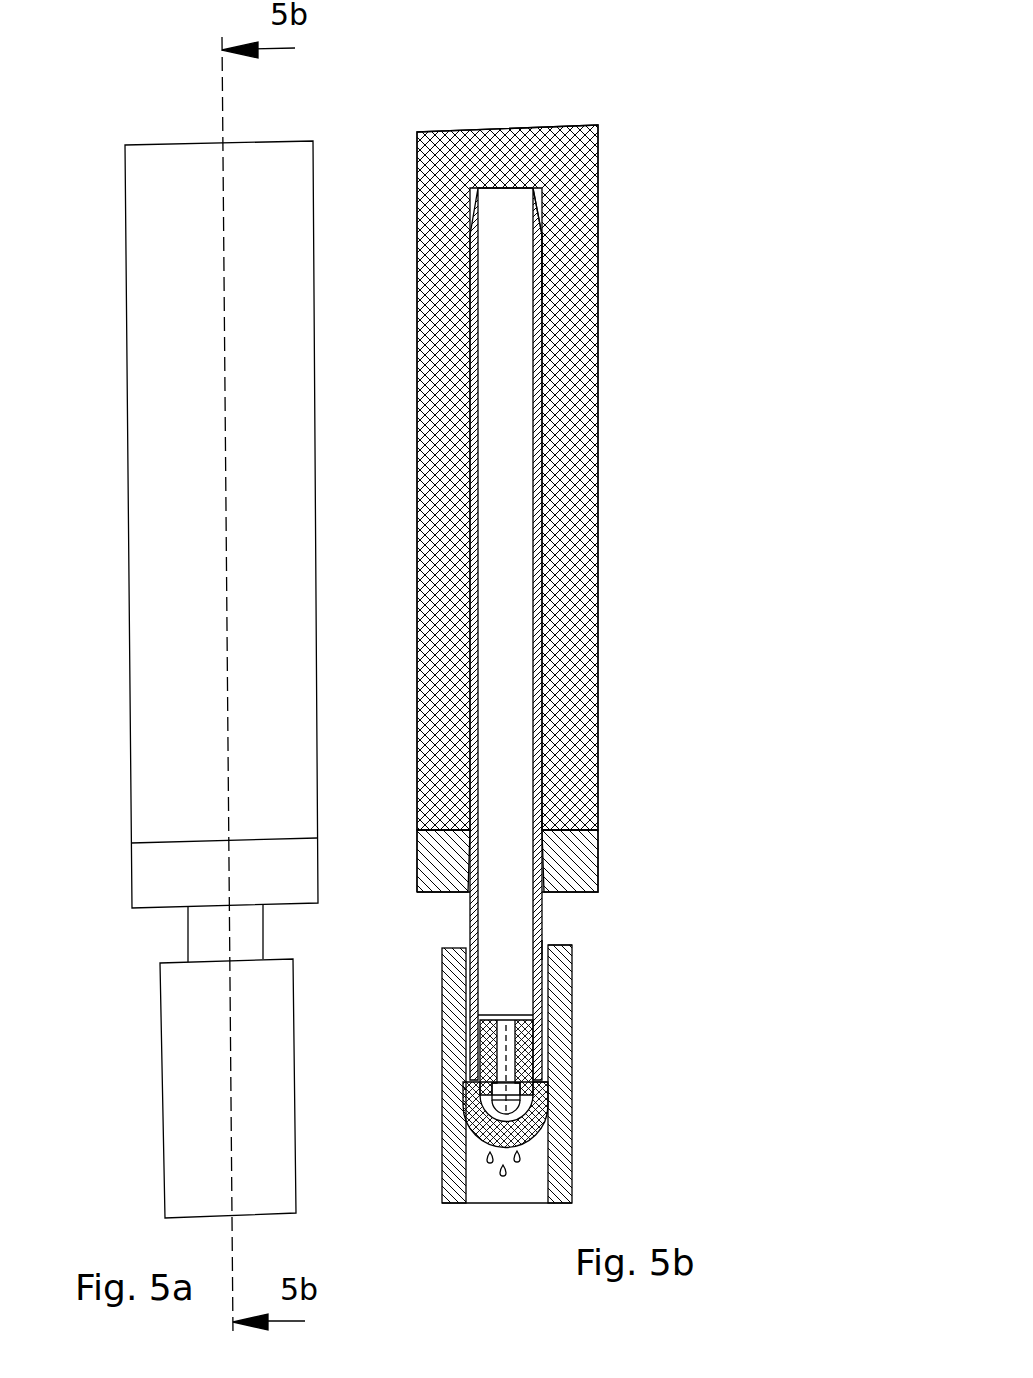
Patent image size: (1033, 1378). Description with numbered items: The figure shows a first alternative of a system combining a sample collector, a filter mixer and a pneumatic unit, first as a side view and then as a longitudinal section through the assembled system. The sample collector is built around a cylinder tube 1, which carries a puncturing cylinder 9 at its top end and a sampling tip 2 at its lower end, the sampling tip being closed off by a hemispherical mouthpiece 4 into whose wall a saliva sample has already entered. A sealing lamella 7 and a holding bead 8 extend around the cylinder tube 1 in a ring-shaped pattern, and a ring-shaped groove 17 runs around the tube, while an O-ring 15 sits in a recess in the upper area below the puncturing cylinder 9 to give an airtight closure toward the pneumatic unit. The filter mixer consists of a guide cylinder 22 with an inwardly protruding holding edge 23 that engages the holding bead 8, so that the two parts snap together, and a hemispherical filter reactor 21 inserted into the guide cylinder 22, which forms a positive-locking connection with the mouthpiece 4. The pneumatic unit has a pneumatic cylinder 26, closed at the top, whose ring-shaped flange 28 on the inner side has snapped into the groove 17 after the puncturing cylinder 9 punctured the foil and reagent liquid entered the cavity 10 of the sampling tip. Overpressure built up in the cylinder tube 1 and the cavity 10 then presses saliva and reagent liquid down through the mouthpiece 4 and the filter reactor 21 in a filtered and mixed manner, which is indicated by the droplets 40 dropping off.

In FIG. 5A, the cylinder tube 1 is at (205, 942).
In FIG. 5B, the cylinder tube 1 is at (538, 645).
In FIG. 5B, the sampling tip 2 is at (528, 1043).
In FIG. 5B, the mouthpiece 4 is at (530, 1092).
In FIG. 5B, the sealing lamella 7 is at (538, 1078).
In FIG. 5B, the holding bead 8 is at (538, 950).
In FIG. 5B, the puncturing cylinder 9 is at (538, 194).
In FIG. 5B, the cavity 10 is at (505, 1065).
In FIG. 5B, the O-ring 15 is at (540, 255).
In FIG. 5B, the groove 17 is at (545, 818).
In FIG. 5B, the filter reactor 21 is at (548, 1112).
In FIG. 5A, the guide cylinder 22 is at (185, 1060).
In FIG. 5B, the guide cylinder 22 is at (573, 975).
In FIG. 5B, the holding edge 23 is at (545, 950).
In FIG. 5A, the pneumatic cylinder 26 is at (160, 415).
In FIG. 5B, the pneumatic cylinder 26 is at (578, 530).
In FIG. 5B, the flange 28 is at (545, 812).
In FIG. 5B, the droplets 40 is at (507, 1175).